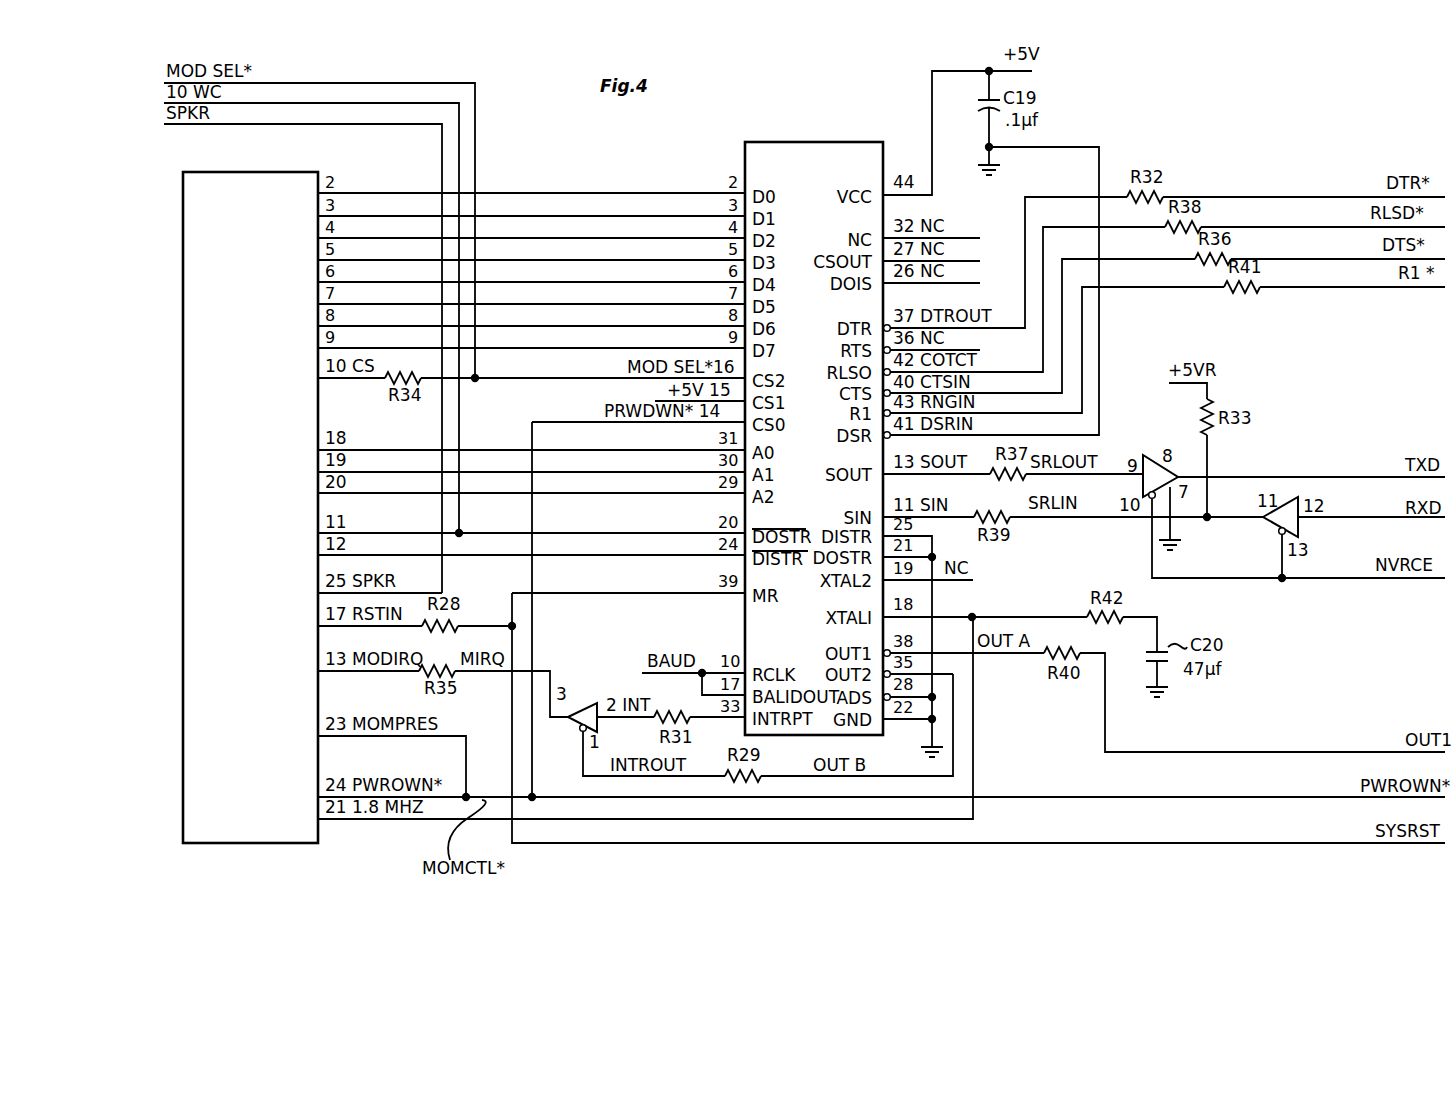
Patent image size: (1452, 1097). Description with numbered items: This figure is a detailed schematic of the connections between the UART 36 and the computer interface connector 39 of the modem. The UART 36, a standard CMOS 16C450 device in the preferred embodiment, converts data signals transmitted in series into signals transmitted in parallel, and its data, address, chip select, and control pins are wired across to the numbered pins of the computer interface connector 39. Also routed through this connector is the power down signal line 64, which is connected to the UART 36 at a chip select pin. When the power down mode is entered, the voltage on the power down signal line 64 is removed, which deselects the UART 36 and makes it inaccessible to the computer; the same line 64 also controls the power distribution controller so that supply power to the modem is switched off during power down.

The UART 36 is at (803, 142).
The computer interface connector 39 is at (183, 692).
The power down signal line 64 is at (566, 420).